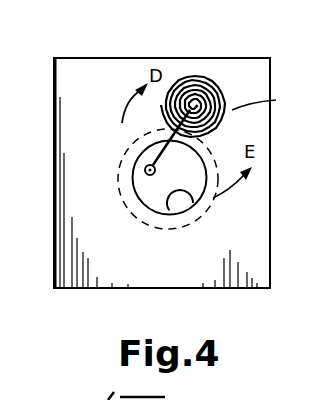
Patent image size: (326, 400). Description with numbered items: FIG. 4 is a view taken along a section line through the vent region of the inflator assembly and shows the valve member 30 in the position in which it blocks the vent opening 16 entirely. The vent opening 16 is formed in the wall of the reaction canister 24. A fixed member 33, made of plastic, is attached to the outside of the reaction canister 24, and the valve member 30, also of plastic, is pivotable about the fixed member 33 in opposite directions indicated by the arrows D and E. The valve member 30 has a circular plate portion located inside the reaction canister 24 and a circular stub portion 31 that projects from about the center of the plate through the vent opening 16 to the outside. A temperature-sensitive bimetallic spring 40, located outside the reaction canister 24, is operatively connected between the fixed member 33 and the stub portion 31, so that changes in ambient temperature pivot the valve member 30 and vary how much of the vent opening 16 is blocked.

The reaction canister 24 is at (121, 52).
The fixed member 33 is at (196, 98).
The temperature-sensitive bimetallic spring 40 is at (265, 97).
The circular stub portion 31 is at (146, 169).
The vent opening 16 is at (169, 211).
The valve member 30 is at (127, 208).